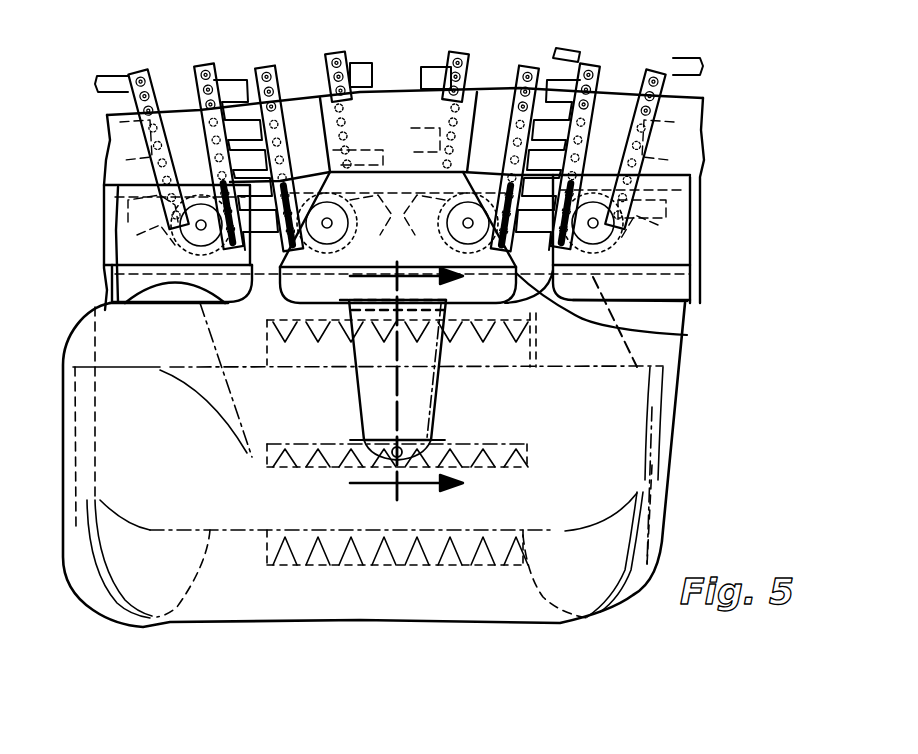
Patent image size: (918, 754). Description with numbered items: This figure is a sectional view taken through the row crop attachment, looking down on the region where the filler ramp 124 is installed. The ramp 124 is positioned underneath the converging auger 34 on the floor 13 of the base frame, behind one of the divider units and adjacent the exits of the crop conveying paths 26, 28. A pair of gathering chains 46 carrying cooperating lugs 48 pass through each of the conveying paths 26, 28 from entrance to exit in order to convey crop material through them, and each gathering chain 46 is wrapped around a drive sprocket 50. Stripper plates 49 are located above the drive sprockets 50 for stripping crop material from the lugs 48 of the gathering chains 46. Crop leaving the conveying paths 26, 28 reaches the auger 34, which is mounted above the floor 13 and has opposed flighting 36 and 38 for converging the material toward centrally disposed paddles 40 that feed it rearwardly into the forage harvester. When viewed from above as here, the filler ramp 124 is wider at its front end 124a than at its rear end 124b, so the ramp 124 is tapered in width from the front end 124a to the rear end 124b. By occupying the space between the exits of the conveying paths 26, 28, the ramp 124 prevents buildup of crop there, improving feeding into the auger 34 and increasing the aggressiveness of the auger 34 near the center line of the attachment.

The floor 13 is at (308, 607).
The crop conveying path 26 is at (572, 40).
The crop conveying path 28 is at (233, 72).
The converging auger 34 is at (628, 437).
The flighting 36 is at (580, 608).
The flighting 38 is at (133, 597).
The paddles 40 is at (423, 550).
The gathering chain 46 is at (198, 65).
The lugs 48 is at (424, 66).
The stripper plate 49 is at (687, 335).
The drive sprocket 50 is at (118, 230).
The filler ramp 124 is at (448, 396).
The front end of filler ramp 124a is at (337, 307).
The rear end of filler ramp 124b is at (433, 428).